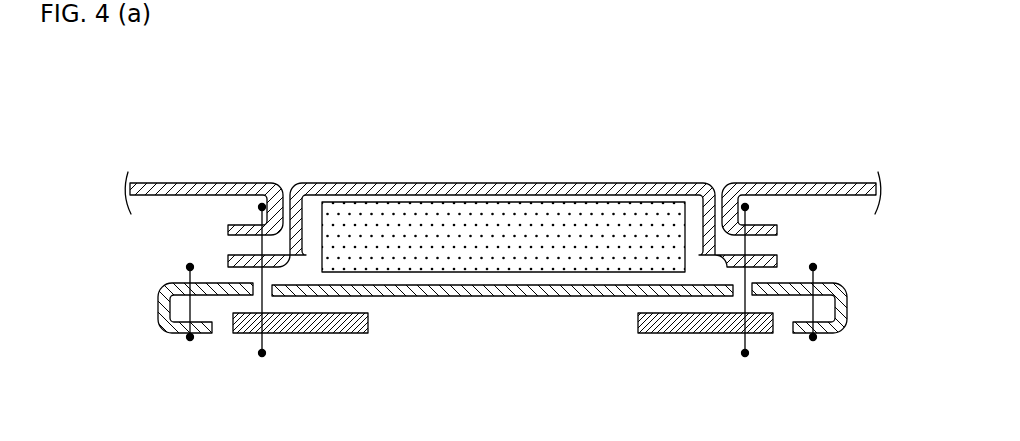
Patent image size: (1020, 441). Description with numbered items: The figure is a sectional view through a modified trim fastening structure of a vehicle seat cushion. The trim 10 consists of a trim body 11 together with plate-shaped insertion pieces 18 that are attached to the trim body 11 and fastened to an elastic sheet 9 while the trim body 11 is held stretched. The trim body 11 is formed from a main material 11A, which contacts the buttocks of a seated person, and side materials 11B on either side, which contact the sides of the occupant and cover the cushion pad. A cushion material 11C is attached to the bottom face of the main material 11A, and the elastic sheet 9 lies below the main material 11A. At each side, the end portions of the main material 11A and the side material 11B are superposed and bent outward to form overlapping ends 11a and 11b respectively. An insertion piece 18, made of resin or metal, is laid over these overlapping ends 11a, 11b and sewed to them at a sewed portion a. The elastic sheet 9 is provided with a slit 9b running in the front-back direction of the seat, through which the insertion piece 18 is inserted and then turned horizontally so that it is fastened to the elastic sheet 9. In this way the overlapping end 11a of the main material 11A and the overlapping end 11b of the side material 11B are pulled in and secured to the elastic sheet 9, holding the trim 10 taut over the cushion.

The trim 10 is at (625, 183).
The trim body 11 is at (502, 190).
The main material 11A is at (520, 183).
The side material 11B is at (150, 183).
The cushion material 11C is at (371, 215).
The overlapping end 11a is at (228, 262).
The overlapping end 11b is at (228, 230).
The sewed portion a is at (262, 183).
The elastic sheet 9 is at (509, 297).
The slit 9b is at (253, 300).
The insertion piece 18 is at (333, 333).